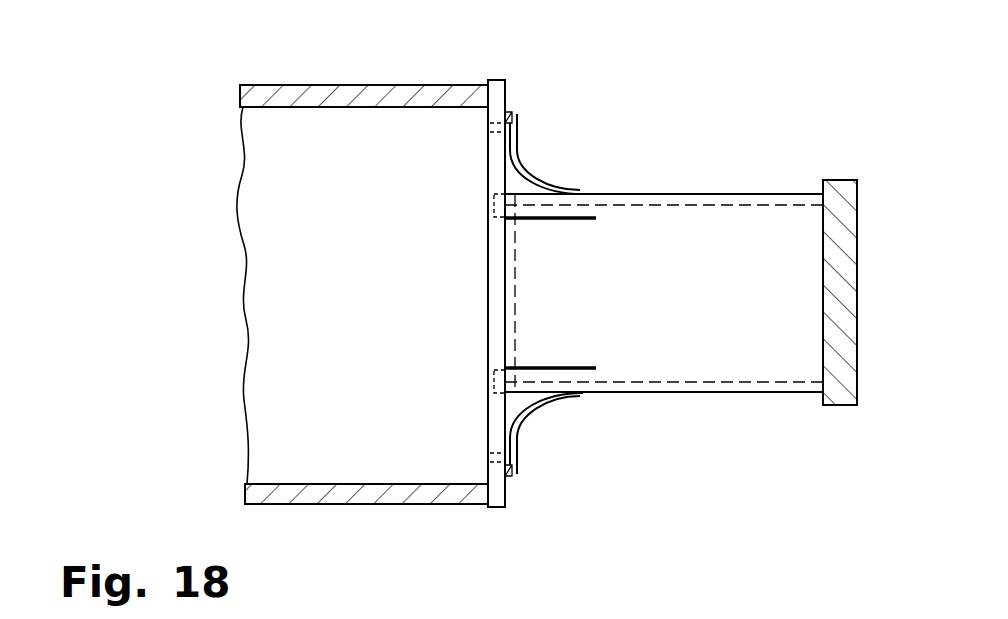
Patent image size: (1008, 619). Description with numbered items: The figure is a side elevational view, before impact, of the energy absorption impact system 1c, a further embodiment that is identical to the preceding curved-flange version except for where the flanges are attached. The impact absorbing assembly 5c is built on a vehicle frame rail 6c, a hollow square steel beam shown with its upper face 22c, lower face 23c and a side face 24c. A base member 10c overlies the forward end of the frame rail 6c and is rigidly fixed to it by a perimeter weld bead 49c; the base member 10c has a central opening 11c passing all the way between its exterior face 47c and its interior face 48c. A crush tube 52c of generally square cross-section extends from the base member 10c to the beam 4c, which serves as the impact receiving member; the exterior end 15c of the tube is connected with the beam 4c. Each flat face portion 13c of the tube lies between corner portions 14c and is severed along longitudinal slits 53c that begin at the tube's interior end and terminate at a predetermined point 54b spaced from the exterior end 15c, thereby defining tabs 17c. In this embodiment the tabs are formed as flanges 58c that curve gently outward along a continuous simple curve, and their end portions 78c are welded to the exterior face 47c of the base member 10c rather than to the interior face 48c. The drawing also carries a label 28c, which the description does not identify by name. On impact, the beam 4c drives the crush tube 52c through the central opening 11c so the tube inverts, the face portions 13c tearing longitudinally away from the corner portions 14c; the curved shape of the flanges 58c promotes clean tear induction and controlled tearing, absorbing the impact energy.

The energy absorption impact system 1c is at (226, 126).
The beam 4c is at (850, 272).
The impact absorbing assembly 5c is at (237, 473).
The vehicle frame rail 6c is at (270, 84).
The base member 10c is at (484, 133).
The central opening 11c is at (490, 438).
The face portion 13c is at (713, 304).
The corner portion 14c is at (748, 194).
The exterior end 15c is at (822, 394).
The tab 17c is at (568, 401).
The upper face 22c is at (404, 85).
The lower face 23c is at (387, 505).
The side face 24c is at (246, 284).
The flange plate 28c is at (502, 82).
The exterior face 47c is at (518, 477).
The interior face 48c is at (490, 381).
The perimeter weld bead 49c is at (514, 114).
The crush tube 52c is at (258, 502).
The slit 53c is at (548, 222).
The predetermined point 54b is at (598, 368).
The flange 58c is at (553, 182).
The end portion 78c is at (518, 446).